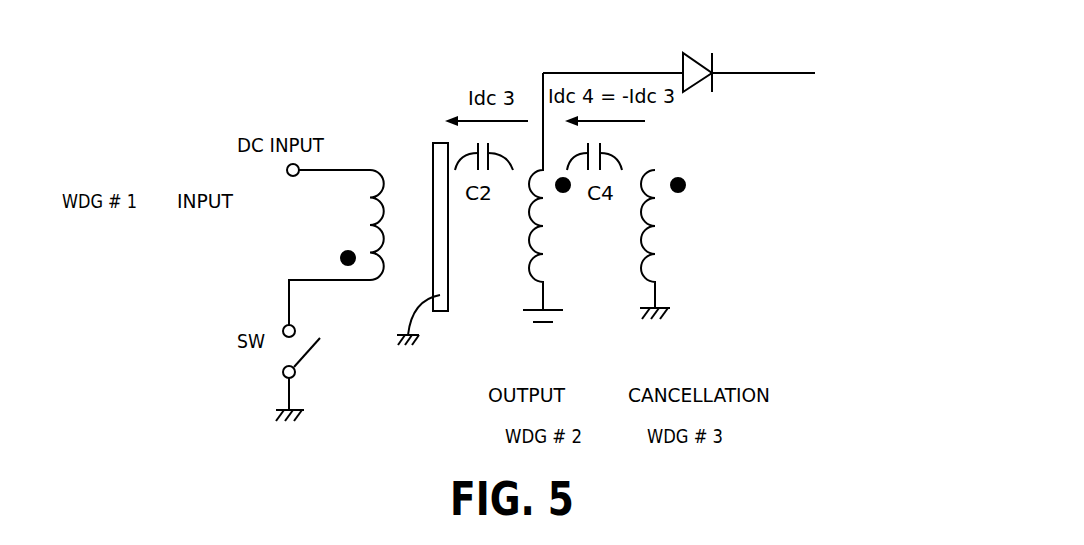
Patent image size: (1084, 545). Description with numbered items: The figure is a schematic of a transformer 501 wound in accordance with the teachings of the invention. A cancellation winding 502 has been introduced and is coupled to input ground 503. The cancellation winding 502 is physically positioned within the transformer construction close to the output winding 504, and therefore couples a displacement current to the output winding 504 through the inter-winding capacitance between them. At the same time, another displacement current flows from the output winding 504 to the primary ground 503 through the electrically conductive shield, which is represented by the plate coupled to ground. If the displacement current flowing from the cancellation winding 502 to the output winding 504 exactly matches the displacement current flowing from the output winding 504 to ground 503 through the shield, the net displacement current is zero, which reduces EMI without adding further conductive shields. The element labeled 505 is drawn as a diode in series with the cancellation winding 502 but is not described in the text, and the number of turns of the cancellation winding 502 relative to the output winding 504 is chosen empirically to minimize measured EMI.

The transformer 501 is at (265, 217).
The cancellation winding 502 is at (666, 244).
The input ground 503 is at (277, 373).
The output winding 504 is at (550, 197).
The diode 505 is at (679, 58).